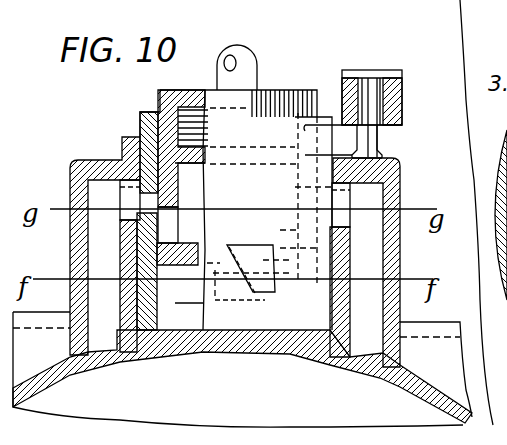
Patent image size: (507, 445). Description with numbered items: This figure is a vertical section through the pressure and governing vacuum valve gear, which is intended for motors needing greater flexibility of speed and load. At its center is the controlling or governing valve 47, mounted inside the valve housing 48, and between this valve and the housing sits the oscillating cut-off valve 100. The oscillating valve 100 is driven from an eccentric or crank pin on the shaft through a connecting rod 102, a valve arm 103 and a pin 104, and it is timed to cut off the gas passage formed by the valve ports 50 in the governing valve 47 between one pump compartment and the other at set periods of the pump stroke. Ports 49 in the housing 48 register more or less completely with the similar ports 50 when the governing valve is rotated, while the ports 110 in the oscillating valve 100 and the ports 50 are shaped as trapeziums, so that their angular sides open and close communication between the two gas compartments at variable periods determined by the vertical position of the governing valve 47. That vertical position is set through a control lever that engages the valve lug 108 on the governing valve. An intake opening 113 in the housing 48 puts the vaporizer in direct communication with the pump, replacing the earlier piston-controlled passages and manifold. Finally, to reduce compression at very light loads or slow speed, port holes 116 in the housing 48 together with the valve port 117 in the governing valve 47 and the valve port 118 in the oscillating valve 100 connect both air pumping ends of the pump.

The valve housing 48 is at (124, 292).
The oscillating cut-off valve 100 is at (122, 143).
The governing valve 47 is at (160, 93).
The valve ports 50 is at (163, 213).
The ports 49 is at (125, 215).
The ports 110 is at (152, 192).
The valve lug 108 is at (257, 55).
The connecting rod 102 is at (395, 92).
The pin 104 is at (367, 102).
The valve arm 103 is at (385, 142).
The intake opening 113 is at (275, 258).
The valve port 117 is at (233, 288).
The valve port 118 is at (495, 167).
The port holes 116 is at (494, 108).